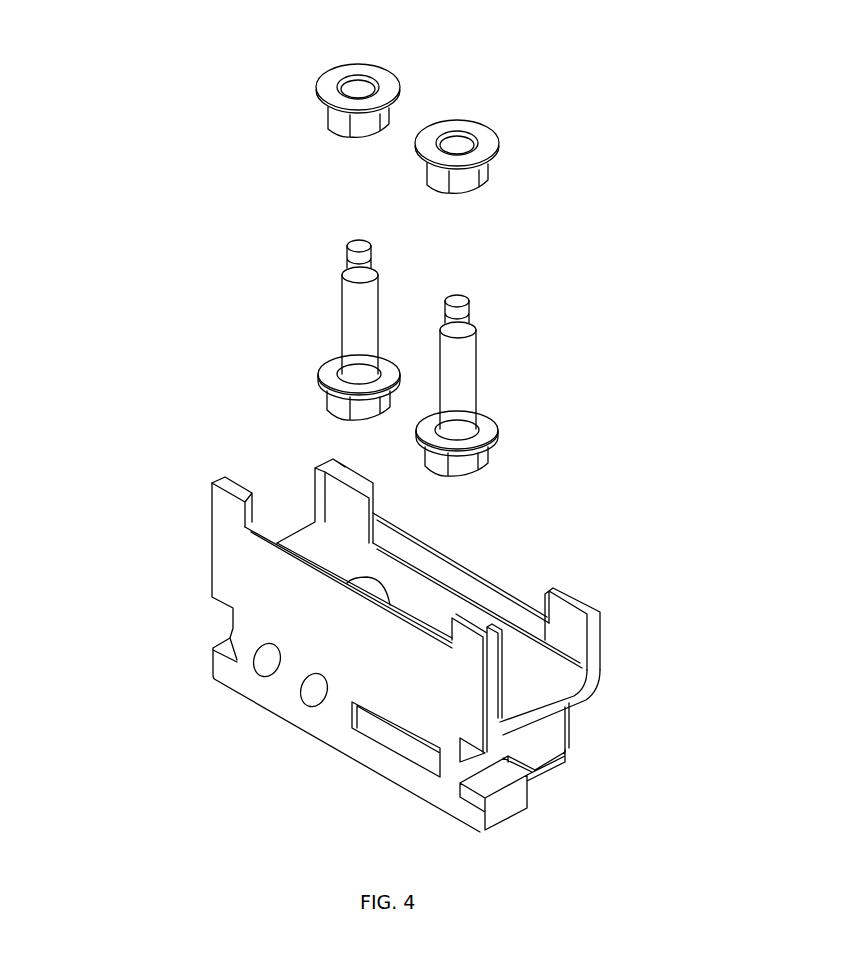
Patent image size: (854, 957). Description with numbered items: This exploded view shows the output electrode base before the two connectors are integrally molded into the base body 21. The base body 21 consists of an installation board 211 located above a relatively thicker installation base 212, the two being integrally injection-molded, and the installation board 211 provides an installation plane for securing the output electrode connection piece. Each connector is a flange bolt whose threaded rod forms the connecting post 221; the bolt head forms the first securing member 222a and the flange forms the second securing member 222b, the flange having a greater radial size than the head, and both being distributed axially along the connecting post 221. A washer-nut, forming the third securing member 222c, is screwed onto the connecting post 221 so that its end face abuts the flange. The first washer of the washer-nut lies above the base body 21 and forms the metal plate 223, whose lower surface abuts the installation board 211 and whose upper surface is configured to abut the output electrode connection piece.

The base body 21 is at (172, 545).
The installation board 211 is at (552, 680).
The installation base 212 is at (462, 800).
The connecting post 221 is at (360, 239).
The first securing member 222a is at (331, 411).
The second securing member 222b is at (326, 375).
The third securing member 222c is at (290, 87).
The metal plate 223 is at (380, 74).